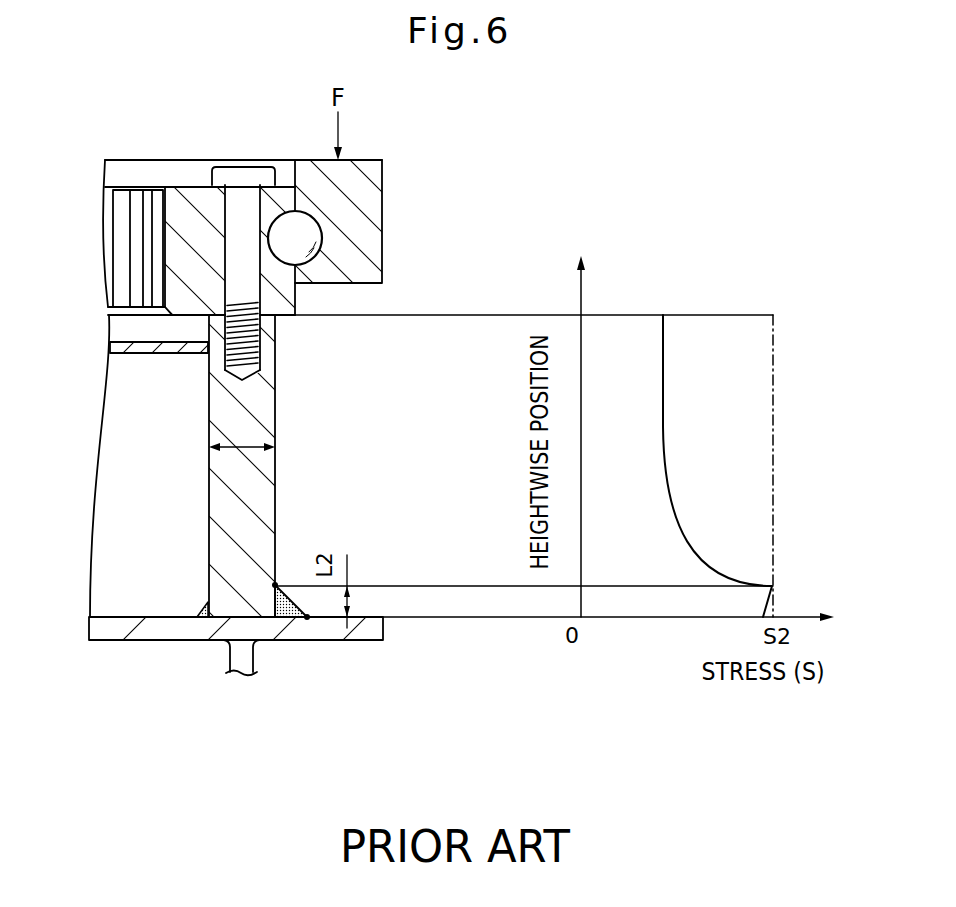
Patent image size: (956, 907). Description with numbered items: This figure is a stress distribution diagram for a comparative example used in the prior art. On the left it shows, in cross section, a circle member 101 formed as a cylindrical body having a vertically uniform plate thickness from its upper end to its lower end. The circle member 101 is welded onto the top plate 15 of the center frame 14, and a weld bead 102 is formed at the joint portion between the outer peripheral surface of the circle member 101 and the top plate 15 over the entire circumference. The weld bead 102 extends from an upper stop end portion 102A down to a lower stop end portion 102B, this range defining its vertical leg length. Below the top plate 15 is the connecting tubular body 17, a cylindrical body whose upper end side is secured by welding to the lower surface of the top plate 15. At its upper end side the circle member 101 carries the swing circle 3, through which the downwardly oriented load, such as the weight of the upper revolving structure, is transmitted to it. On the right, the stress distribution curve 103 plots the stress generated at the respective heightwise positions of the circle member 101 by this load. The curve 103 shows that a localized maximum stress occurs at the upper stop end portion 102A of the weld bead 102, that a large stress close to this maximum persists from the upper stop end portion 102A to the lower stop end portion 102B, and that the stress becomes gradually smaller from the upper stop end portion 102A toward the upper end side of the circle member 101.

The swing circle 3 is at (195, 218).
The center frame 14 is at (183, 648).
The top plate 15 is at (123, 630).
The connecting tubular body 17 is at (241, 668).
The circle member 101 is at (255, 485).
The weld bead 102 is at (282, 622).
The upper stop end portion 102A is at (276, 582).
The lower stop end portion 102B is at (308, 620).
The stress distribution curve 103 is at (665, 427).